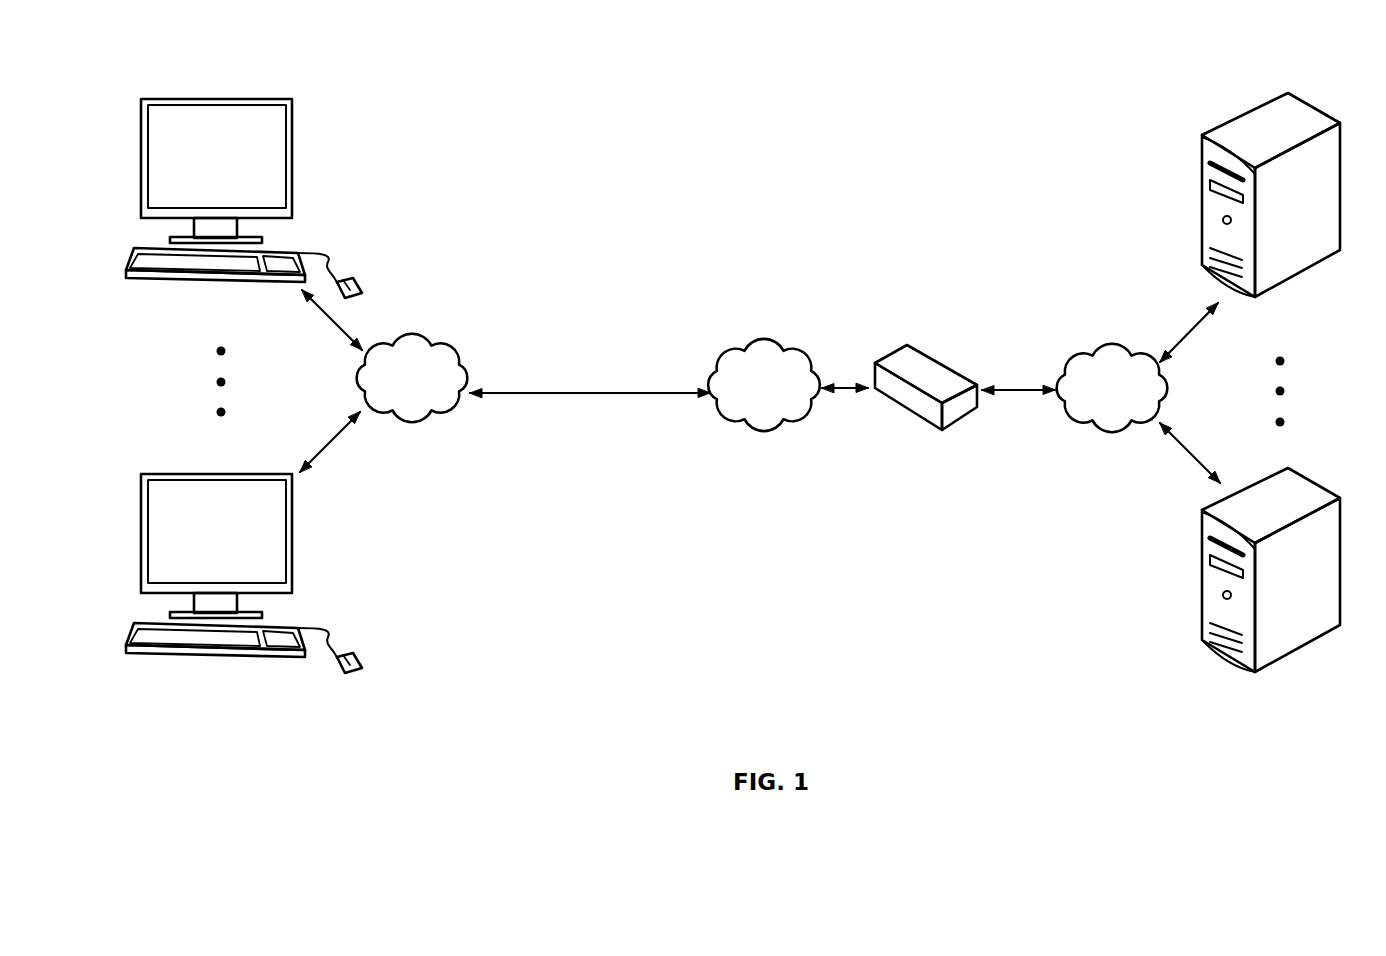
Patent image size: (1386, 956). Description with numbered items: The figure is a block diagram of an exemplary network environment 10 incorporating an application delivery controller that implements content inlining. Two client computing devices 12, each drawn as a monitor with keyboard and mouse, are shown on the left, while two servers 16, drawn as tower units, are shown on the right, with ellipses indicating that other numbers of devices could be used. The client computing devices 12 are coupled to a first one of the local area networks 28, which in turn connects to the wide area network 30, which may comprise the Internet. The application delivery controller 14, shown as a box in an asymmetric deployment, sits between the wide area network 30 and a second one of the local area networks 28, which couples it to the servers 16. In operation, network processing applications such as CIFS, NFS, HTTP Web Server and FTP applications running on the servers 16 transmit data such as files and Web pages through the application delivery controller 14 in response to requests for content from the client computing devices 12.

The network environment 10 is at (712, 240).
The client computing device 12 is at (278, 162).
The application delivery controller 14 is at (917, 360).
The server 16 is at (1210, 212).
The local area network 28 is at (412, 416).
The wide area network 30 is at (764, 425).